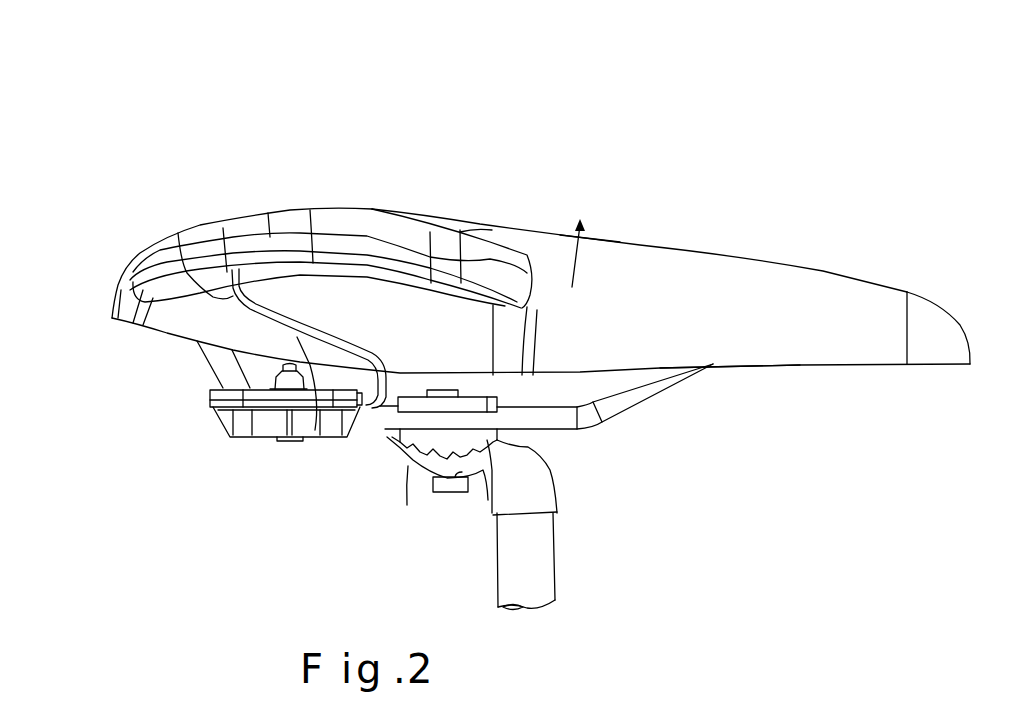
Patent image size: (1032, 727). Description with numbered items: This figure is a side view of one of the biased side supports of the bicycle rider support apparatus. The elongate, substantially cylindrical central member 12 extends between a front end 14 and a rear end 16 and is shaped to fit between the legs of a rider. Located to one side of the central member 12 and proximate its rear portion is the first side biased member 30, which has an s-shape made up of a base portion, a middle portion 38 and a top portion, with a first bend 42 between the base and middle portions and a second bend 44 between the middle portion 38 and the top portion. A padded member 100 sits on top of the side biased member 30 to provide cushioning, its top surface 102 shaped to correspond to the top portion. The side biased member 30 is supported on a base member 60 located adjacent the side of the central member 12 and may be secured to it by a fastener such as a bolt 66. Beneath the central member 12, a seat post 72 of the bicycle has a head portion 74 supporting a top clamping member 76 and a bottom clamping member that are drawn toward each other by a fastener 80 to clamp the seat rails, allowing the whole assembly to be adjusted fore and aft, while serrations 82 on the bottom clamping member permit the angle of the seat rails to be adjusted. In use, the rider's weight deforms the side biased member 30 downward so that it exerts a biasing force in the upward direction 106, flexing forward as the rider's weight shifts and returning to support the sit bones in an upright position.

The padded member 100 is at (712, 128).
The central member 12 is at (825, 271).
The front end 14 is at (972, 333).
The rear end 16 is at (99, 300).
The first side biased member 30 is at (424, 324).
The middle portion 38 is at (315, 430).
The first bend 42 is at (376, 404).
The second bend 44 is at (178, 233).
The base member 60 is at (253, 437).
The bolt 66 is at (270, 374).
The seat post 72 is at (558, 567).
The head portion 74 is at (560, 488).
The top clamping member 76 is at (483, 405).
The fastener 80 is at (453, 487).
The serrations 82 is at (427, 453).
The top surface 102 is at (350, 208).
The upward direction 106 is at (590, 243).